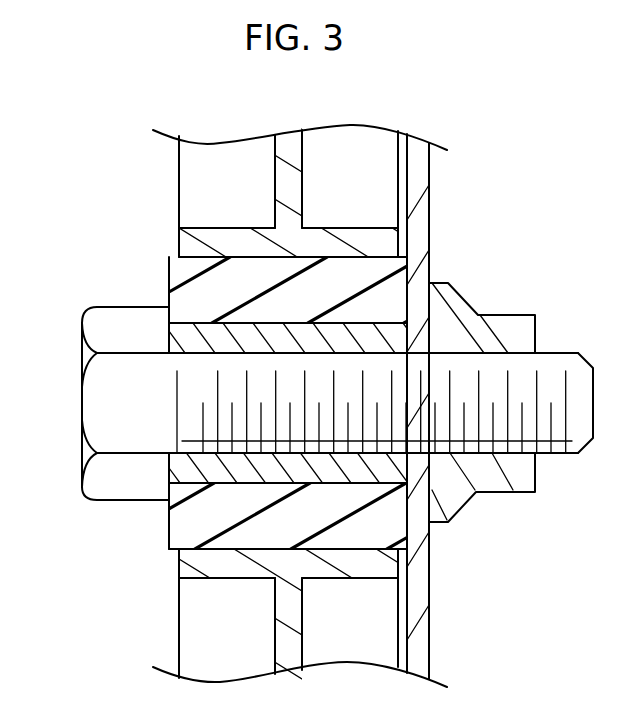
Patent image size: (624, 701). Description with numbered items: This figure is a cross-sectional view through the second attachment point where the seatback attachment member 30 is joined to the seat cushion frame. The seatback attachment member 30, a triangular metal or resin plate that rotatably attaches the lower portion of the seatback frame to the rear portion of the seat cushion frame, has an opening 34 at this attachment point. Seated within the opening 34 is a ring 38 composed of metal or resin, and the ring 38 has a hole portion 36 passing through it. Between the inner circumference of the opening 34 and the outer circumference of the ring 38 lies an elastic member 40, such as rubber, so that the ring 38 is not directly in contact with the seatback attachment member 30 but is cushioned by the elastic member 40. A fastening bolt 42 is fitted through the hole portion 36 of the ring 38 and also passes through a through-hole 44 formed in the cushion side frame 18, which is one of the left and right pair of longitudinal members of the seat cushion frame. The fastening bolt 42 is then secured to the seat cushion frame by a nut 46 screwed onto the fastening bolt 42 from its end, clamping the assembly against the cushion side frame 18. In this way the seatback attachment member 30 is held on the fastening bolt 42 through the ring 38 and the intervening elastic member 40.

The cushion side frame 18 is at (418, 215).
The seatback attachment member 30 is at (290, 168).
The opening 34 is at (267, 258).
The hole portion 36 is at (283, 354).
The ring 38 is at (188, 338).
The elastic member 40 is at (197, 527).
The fastening bolt 42 is at (112, 398).
The through-hole 44 is at (418, 445).
The nut 46 is at (487, 332).